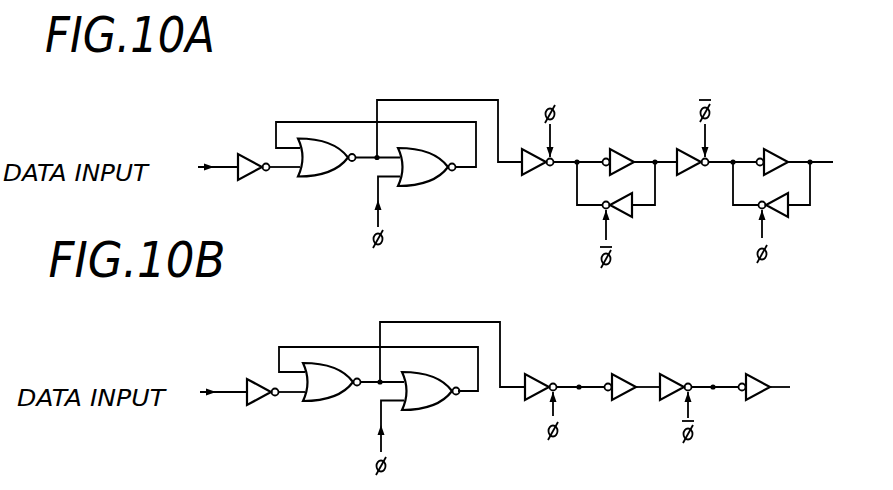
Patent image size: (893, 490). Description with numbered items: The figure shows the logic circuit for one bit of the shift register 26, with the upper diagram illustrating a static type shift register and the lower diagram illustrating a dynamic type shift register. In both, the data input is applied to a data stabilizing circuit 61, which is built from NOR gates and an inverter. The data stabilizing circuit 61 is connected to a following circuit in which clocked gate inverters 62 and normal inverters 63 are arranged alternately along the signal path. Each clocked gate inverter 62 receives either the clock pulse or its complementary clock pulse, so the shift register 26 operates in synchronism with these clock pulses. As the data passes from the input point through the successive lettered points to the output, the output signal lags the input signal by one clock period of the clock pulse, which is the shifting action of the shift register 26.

In FIG. 10A, the shift register 26 is at (819, 56).
In FIG. 10B, the shift register 26 is at (791, 303).
In FIG. 10A, the data stabilizing circuit 61 is at (510, 88).
In FIG. 10B, the data stabilizing circuit 61 is at (510, 313).
In FIG. 10A, the clocked gate inverter 62 is at (531, 176).
In FIG. 10B, the clocked gate inverter 62 is at (538, 373).
In FIG. 10A, the normal inverter 63 is at (626, 149).
In FIG. 10B, the normal inverter 63 is at (619, 373).